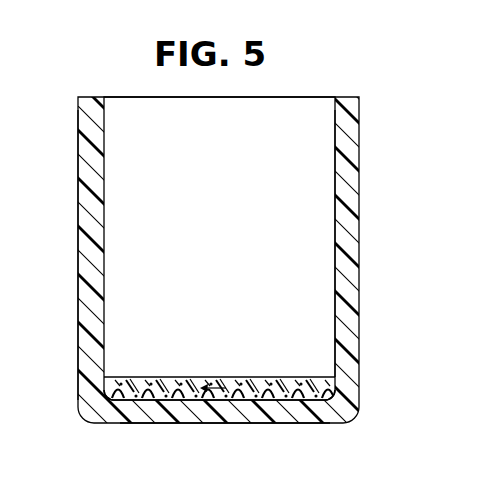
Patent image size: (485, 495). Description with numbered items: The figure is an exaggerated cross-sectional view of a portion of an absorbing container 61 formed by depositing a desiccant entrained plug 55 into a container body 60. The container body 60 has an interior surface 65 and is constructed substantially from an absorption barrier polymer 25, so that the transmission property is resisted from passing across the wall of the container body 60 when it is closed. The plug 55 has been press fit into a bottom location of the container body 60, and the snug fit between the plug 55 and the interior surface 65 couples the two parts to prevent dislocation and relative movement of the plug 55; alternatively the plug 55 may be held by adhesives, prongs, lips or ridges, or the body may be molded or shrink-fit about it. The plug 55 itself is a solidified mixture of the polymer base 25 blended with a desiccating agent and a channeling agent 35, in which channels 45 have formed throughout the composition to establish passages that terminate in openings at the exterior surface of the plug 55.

The polymer base 25 is at (88, 290).
The channeling agent 35 is at (160, 401).
The channels 45 is at (193, 401).
The plug 55 is at (250, 378).
The container body 60 is at (360, 290).
The absorbing container 61 is at (376, 166).
The interior surface 65 is at (335, 322).